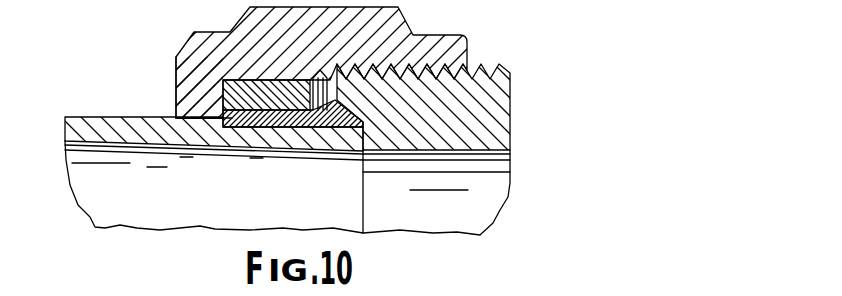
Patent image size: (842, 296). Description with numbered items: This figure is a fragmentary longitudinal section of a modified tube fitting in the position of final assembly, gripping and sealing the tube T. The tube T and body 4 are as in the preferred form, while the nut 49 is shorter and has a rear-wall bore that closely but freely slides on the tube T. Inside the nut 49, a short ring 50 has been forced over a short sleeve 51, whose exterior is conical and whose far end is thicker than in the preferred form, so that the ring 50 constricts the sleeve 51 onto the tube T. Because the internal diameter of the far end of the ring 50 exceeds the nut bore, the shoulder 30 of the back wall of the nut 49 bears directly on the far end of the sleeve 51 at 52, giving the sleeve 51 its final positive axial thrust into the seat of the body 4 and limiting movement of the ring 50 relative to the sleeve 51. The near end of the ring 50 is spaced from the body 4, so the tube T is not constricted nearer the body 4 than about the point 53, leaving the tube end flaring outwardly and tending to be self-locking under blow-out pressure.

The tube T is at (87, 117).
The body 4 is at (505, 103).
The shoulder 30 is at (197, 88).
The nut 49 is at (414, 35).
The ring 50 is at (237, 88).
The sleeve 51 is at (282, 127).
The engagement point 52 is at (232, 122).
The constriction limit point 53 is at (327, 151).